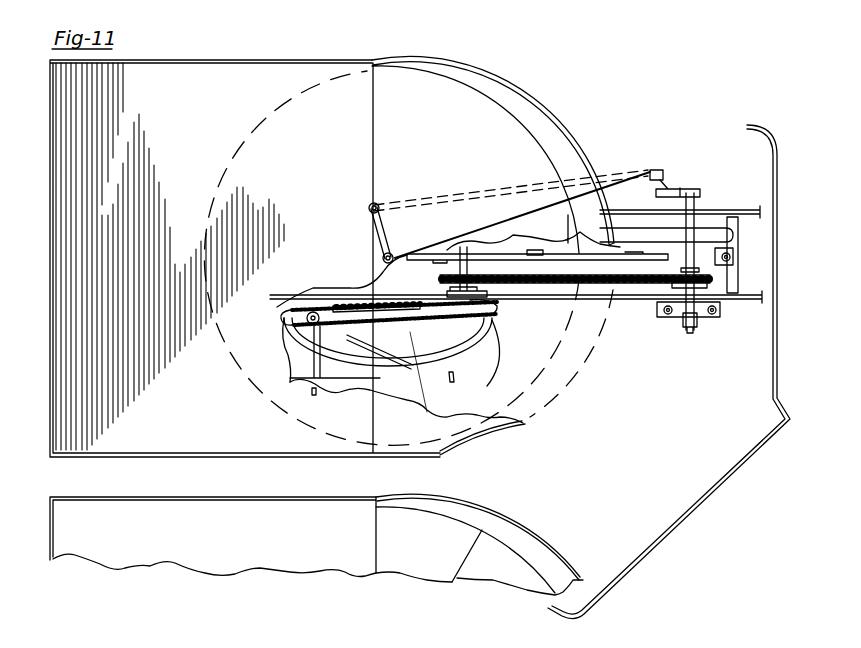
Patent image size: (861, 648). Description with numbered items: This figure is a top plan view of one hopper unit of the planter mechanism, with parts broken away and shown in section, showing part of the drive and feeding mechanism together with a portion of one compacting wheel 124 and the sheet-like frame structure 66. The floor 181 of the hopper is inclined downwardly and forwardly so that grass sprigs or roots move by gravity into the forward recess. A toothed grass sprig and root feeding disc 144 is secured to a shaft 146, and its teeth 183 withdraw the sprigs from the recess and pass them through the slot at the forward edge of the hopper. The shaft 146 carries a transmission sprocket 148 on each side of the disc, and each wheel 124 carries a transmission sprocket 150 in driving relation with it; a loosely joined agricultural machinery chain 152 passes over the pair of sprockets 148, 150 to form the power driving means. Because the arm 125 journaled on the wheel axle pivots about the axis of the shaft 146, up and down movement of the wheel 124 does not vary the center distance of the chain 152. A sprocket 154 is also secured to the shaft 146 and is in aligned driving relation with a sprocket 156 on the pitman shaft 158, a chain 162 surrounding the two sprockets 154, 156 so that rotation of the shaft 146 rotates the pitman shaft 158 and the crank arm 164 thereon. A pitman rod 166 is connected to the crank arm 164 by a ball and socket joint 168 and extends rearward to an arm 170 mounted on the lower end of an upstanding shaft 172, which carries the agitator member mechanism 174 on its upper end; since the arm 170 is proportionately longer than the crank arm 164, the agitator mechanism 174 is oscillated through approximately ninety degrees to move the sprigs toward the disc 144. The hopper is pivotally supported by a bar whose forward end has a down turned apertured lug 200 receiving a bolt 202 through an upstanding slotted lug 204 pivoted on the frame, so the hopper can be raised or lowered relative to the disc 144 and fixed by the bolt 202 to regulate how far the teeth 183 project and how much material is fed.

The housing frame 66 is at (66, 512).
The floor 181 is at (257, 78).
The agitator member mechanism 174 is at (508, 137).
The wheel 124 is at (488, 360).
The arm 125 is at (283, 327).
The transmission sprocket 150 is at (311, 312).
The chain 152 is at (404, 318).
The transmission sprocket 148 is at (472, 312).
The sprocket 154 is at (500, 292).
The chain 162 is at (617, 283).
The toothed grass sprig and/or root feeding disc 144 is at (568, 253).
The teeth 183 is at (538, 250).
The shaft 146 is at (464, 250).
The pitman rod 166 is at (631, 172).
The ball and socket joint 168 is at (661, 175).
The crank arm 164 is at (668, 188).
The upstanding slotted lug 204 is at (733, 250).
The down turned apertured lug 200 is at (713, 272).
The bolt 202 is at (733, 258).
The sprocket 156 is at (660, 285).
The pitman shaft 158 is at (690, 328).
The arm 170 is at (384, 236).
The upstanding shaft 172 is at (384, 257).